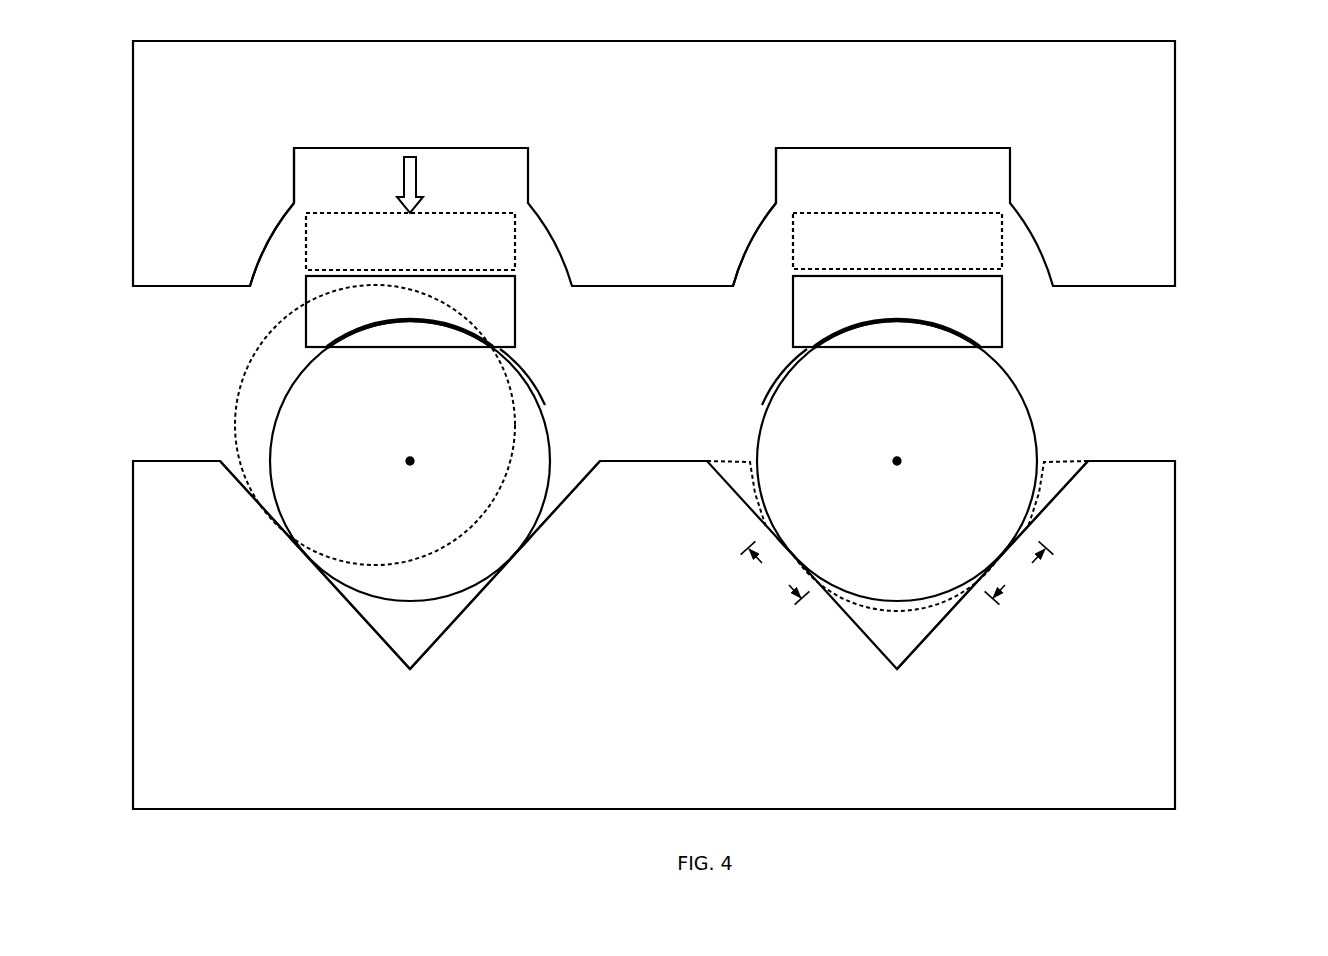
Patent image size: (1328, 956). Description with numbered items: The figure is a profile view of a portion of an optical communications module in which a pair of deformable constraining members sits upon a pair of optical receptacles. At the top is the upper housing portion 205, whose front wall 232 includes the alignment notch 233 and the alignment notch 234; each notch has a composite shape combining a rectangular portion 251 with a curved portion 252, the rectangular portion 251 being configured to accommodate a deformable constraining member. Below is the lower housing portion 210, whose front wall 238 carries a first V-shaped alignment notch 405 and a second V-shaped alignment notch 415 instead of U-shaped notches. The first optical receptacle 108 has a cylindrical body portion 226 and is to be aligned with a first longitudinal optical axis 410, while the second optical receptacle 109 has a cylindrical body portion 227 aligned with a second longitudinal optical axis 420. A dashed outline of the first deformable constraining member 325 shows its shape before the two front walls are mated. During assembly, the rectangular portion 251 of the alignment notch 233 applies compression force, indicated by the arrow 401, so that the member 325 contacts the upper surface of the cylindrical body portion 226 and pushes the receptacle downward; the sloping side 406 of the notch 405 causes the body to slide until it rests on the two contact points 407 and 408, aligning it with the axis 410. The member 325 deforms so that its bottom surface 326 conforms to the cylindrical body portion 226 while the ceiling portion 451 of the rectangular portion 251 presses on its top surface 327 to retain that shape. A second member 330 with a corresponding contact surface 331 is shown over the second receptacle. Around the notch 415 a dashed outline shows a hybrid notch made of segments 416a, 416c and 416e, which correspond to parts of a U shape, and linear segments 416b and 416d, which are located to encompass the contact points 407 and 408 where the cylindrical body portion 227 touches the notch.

The upper housing portion 205 is at (704, 163).
The front wall 232 is at (637, 121).
The alignment notch 233 is at (341, 128).
The alignment notch 234 is at (826, 128).
The rectangular portion 251 is at (261, 185).
The curved portion 252 is at (236, 225).
The ceiling portion 451 is at (473, 149).
The arrow 401 is at (403, 188).
The first deformable constraining member 325 is at (396, 255).
The top surface 327 is at (450, 277).
The bottom surface 326 is at (384, 322).
The second pad 330 is at (880, 255).
The contact region 331 is at (868, 326).
The first optical receptacle 108 is at (261, 352).
The first longitudinal optical axis 410 is at (412, 460).
The cylindrical body portion 226 is at (523, 372).
The second optical receptacle 109 is at (881, 508).
The second longitudinal optical axis 420 is at (899, 460).
The cylindrical body portion 227 is at (785, 378).
The lower housing portion 210 is at (706, 635).
The front wall 238 is at (660, 689).
The first V-shaped alignment notch 405 is at (569, 450).
The second V-shaped alignment notch 415 is at (1063, 438).
The sloping side 406 is at (229, 462).
The contact point 407 is at (302, 557).
The contact point 408 is at (518, 559).
The segment 416a is at (752, 488).
The linear segment 416b is at (775, 572).
The segment 416c is at (861, 605).
The linear segment 416d is at (1019, 572).
The segment 416e is at (1042, 488).